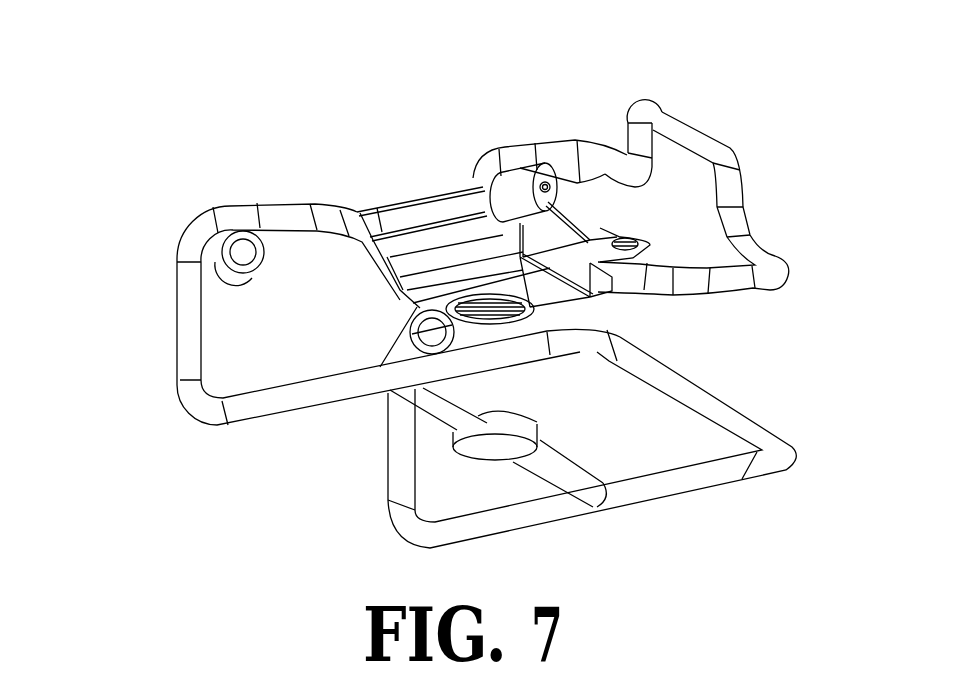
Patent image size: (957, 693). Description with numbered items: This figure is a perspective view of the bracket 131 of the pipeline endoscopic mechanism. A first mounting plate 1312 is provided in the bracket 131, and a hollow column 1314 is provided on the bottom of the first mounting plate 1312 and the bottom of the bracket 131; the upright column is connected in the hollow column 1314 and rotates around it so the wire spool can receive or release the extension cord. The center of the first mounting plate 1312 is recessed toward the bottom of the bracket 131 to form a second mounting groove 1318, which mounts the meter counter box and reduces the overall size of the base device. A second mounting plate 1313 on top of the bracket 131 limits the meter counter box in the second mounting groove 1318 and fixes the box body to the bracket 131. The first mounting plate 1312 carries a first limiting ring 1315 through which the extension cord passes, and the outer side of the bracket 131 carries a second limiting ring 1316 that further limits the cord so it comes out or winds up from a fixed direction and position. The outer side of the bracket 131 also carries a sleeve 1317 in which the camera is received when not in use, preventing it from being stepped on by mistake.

The bracket 131 is at (462, 287).
The first mounting plate 1312 is at (507, 290).
The second mounting plate 1313 is at (592, 165).
The hollow column 1314 is at (452, 306).
The first limiting ring 1315 is at (307, 203).
The second limiting ring 1316 is at (201, 263).
The sleeve 1317 is at (532, 227).
The second mounting groove 1318 is at (603, 229).